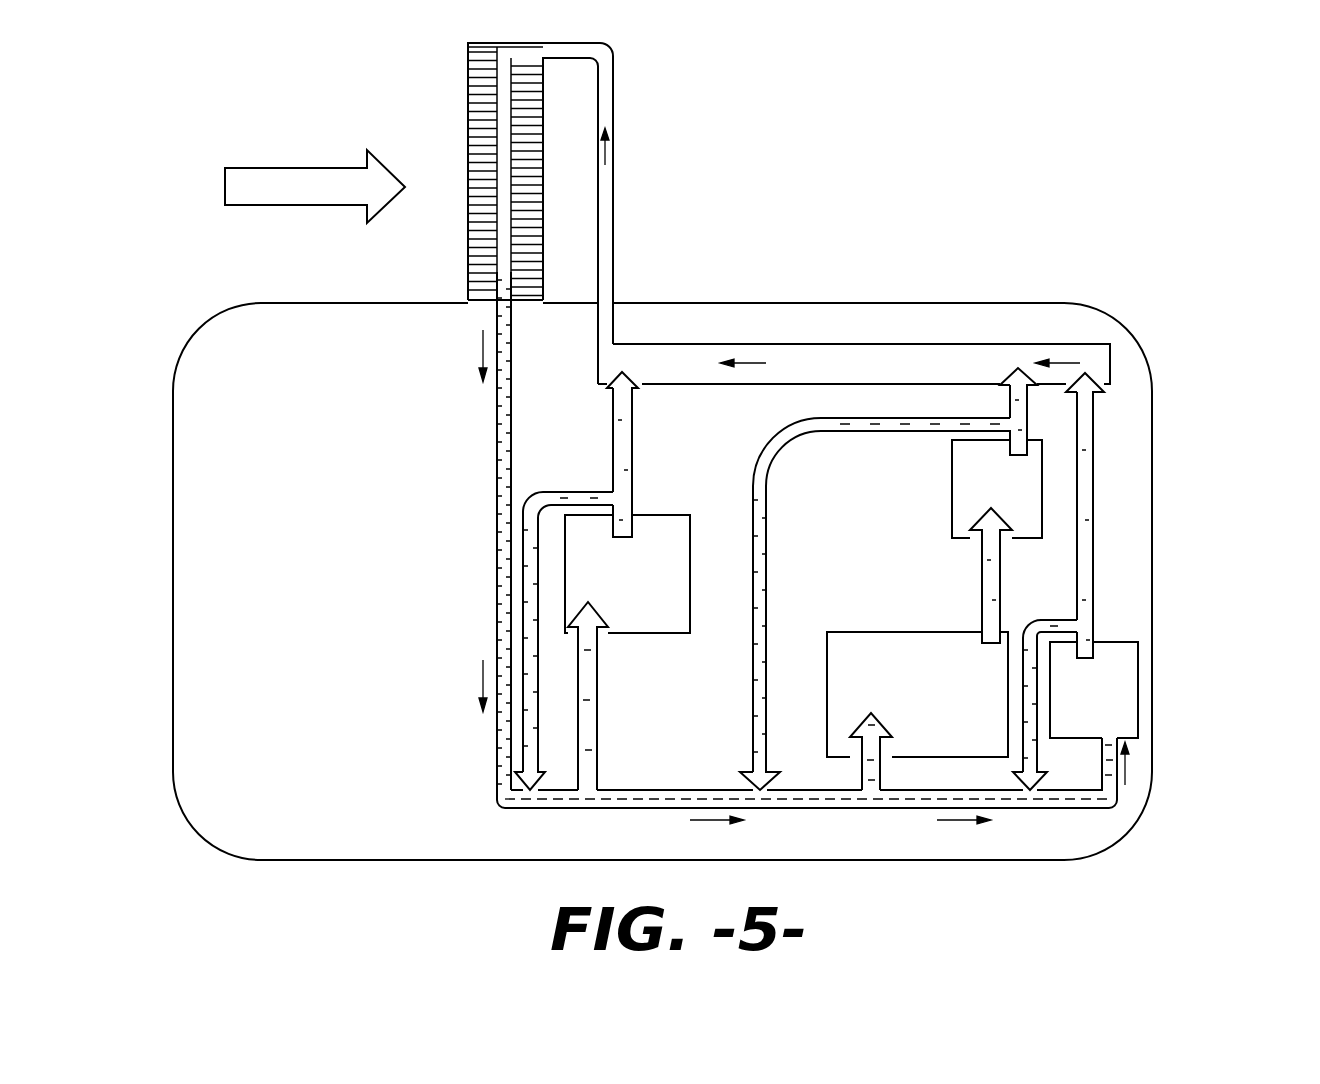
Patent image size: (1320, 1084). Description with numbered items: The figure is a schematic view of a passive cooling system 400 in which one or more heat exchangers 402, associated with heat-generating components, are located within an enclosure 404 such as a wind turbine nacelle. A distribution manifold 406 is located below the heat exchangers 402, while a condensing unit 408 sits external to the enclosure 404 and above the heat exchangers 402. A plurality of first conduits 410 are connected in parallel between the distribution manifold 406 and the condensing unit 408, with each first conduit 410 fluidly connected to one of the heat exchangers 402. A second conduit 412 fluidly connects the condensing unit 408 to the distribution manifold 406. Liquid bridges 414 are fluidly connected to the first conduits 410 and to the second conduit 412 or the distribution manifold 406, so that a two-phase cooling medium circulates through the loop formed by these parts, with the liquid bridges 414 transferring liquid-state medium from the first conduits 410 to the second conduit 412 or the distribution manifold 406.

The passive cooling system 400 is at (1048, 219).
The heat exchanger 402 is at (633, 634).
The enclosure 404 is at (1092, 309).
The distribution manifold 406 is at (1040, 808).
The condensing unit 408 is at (468, 100).
The first conduit 410 is at (632, 463).
The second conduit 412 is at (497, 471).
The liquid bridge 414 is at (523, 585).